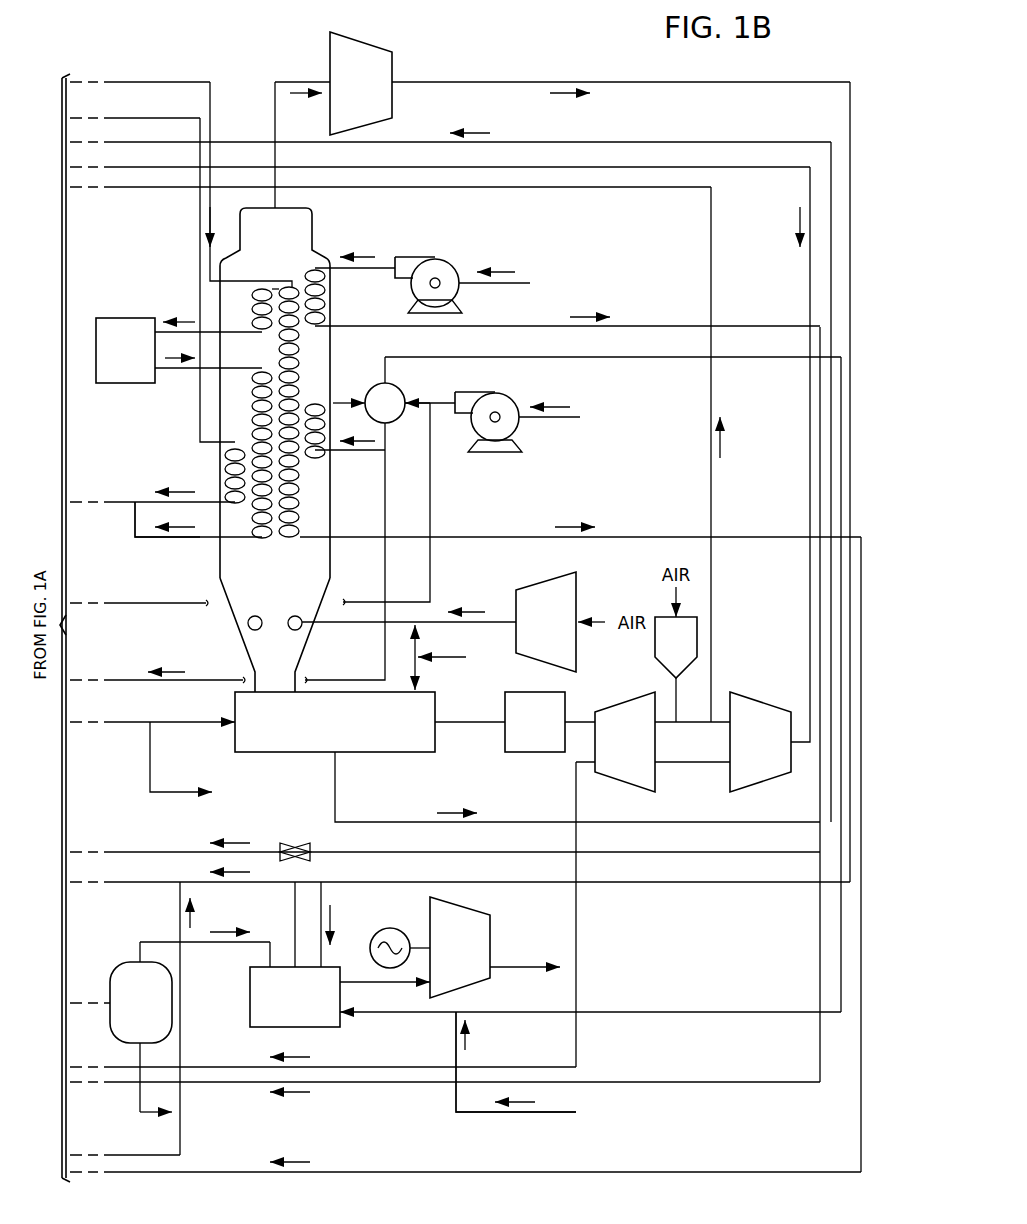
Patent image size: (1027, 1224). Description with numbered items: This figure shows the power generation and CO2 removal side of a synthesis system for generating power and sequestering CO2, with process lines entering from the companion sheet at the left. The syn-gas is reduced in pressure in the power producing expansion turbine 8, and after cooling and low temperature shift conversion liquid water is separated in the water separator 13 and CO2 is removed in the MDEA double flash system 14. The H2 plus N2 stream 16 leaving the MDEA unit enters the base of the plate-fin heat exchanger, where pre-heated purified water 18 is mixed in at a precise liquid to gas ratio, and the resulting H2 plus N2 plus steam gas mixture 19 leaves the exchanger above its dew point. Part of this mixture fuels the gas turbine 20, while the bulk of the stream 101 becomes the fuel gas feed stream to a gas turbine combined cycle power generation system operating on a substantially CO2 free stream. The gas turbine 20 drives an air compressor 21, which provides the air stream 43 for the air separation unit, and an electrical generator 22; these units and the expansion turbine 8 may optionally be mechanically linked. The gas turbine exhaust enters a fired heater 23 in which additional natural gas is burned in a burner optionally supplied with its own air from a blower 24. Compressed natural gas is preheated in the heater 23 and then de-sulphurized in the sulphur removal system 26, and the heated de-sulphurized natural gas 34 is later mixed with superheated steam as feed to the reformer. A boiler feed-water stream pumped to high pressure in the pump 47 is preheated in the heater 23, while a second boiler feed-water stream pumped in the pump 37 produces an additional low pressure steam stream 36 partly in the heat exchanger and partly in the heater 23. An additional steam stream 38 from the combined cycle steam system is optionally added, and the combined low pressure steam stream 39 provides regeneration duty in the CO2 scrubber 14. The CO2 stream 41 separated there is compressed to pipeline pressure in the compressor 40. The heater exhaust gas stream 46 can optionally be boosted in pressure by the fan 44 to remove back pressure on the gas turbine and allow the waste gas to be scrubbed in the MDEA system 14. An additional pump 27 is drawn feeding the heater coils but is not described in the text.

The power producing expansion turbine 8 is at (754, 753).
The water separator 13 is at (129, 1015).
The MDEA double flash system 14 is at (250, 997).
The H2 plus N2 stream 16 is at (130, 884).
The pre-heated purified water 18 is at (130, 850).
The H2 plus N2 plus steam gas mixture 19 is at (130, 724).
The gas turbine 20 is at (280, 754).
The air compressor 21 is at (614, 753).
The electrical generator 22 is at (523, 733).
The fired heater 23 is at (264, 240).
The blower 24 is at (534, 635).
The sulphur removal system 26 is at (113, 362).
The pump 27 is at (437, 254).
The heated de-sulphurized natural gas 34 is at (180, 540).
The low pressure steam stream 36 is at (725, 1080).
The boiler feed-water pump 37 is at (495, 455).
The additional steam stream 38 is at (515, 1114).
The combined low pressure steam stream 39 is at (400, 1014).
The CO2 compressor 40 is at (448, 959).
The CO2 stream 41 is at (520, 965).
The air stream 43 is at (574, 782).
The fan 44 is at (349, 96).
The heater exhaust gas stream 46 is at (301, 80).
The boiler feed-water pump 47 is at (448, 660).
The fuel gas feed stream 101 is at (186, 794).